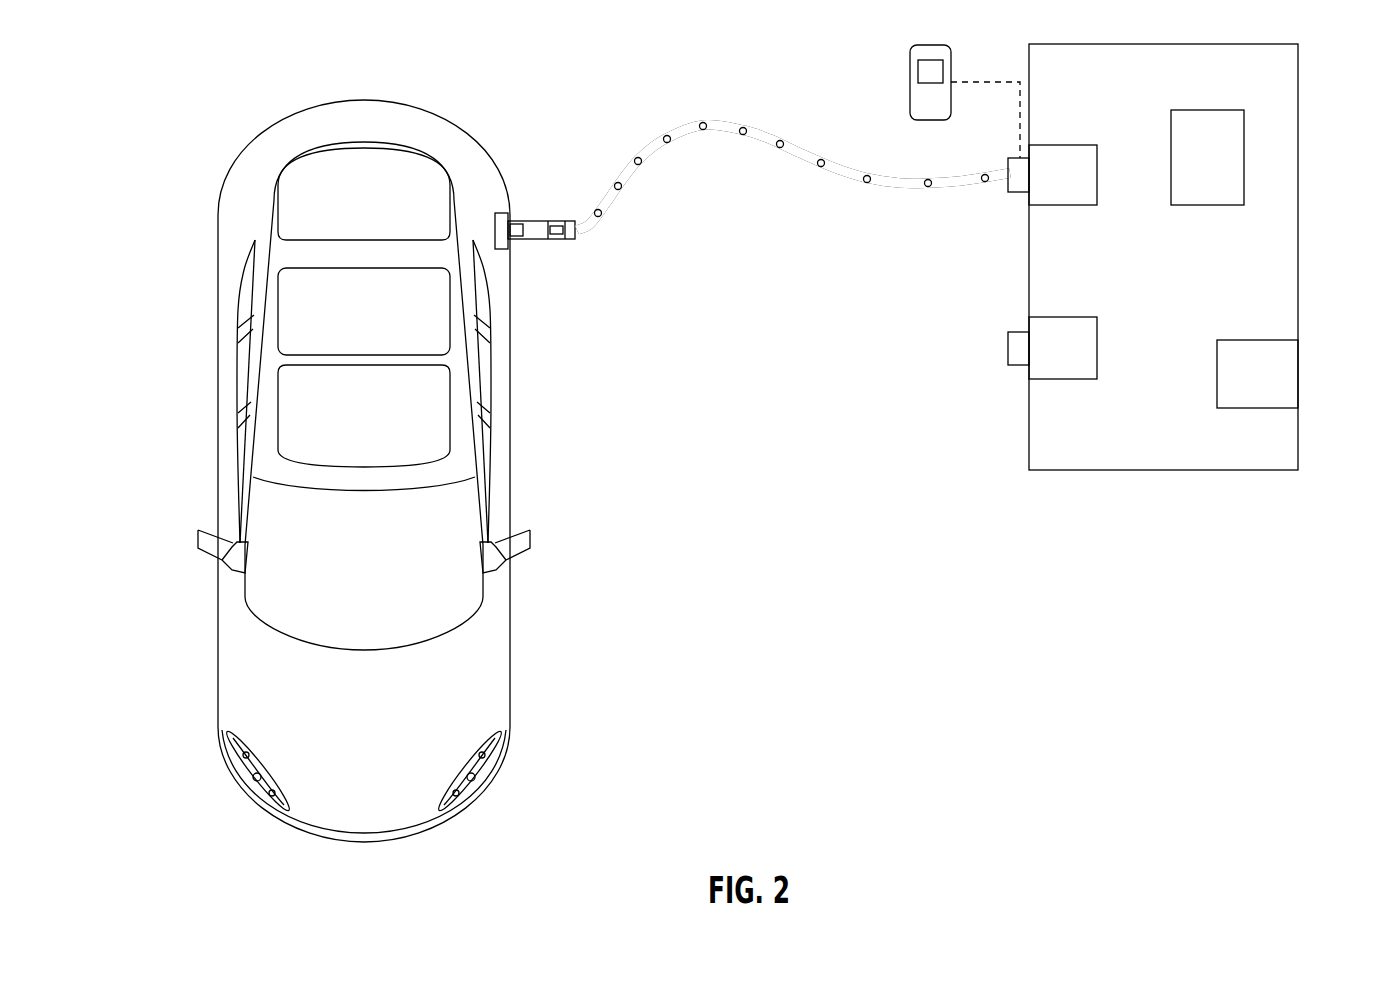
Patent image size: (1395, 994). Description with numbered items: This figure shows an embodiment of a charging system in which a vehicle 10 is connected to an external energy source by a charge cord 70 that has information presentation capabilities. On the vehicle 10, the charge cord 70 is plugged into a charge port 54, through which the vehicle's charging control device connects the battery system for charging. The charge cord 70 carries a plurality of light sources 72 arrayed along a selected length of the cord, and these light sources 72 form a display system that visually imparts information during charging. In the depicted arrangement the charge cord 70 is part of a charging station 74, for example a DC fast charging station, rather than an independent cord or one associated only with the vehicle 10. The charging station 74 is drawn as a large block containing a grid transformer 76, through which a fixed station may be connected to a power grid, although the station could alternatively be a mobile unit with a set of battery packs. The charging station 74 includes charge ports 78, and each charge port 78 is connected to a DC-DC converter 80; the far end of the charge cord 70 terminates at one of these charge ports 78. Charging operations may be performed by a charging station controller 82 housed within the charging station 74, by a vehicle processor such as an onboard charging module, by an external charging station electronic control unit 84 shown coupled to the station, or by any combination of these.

The vehicle 10 is at (297, 122).
The charge port 54 is at (502, 213).
The charge cord 70 is at (641, 152).
The light sources 72 is at (744, 136).
The charging station 74 is at (1298, 130).
The grid transformer 76 is at (1273, 389).
The charge ports 78 is at (1018, 193).
The DC-DC converter 80 is at (1078, 192).
The charging station controller 82 is at (1222, 172).
The external charging station electronic control unit 84 is at (912, 82).